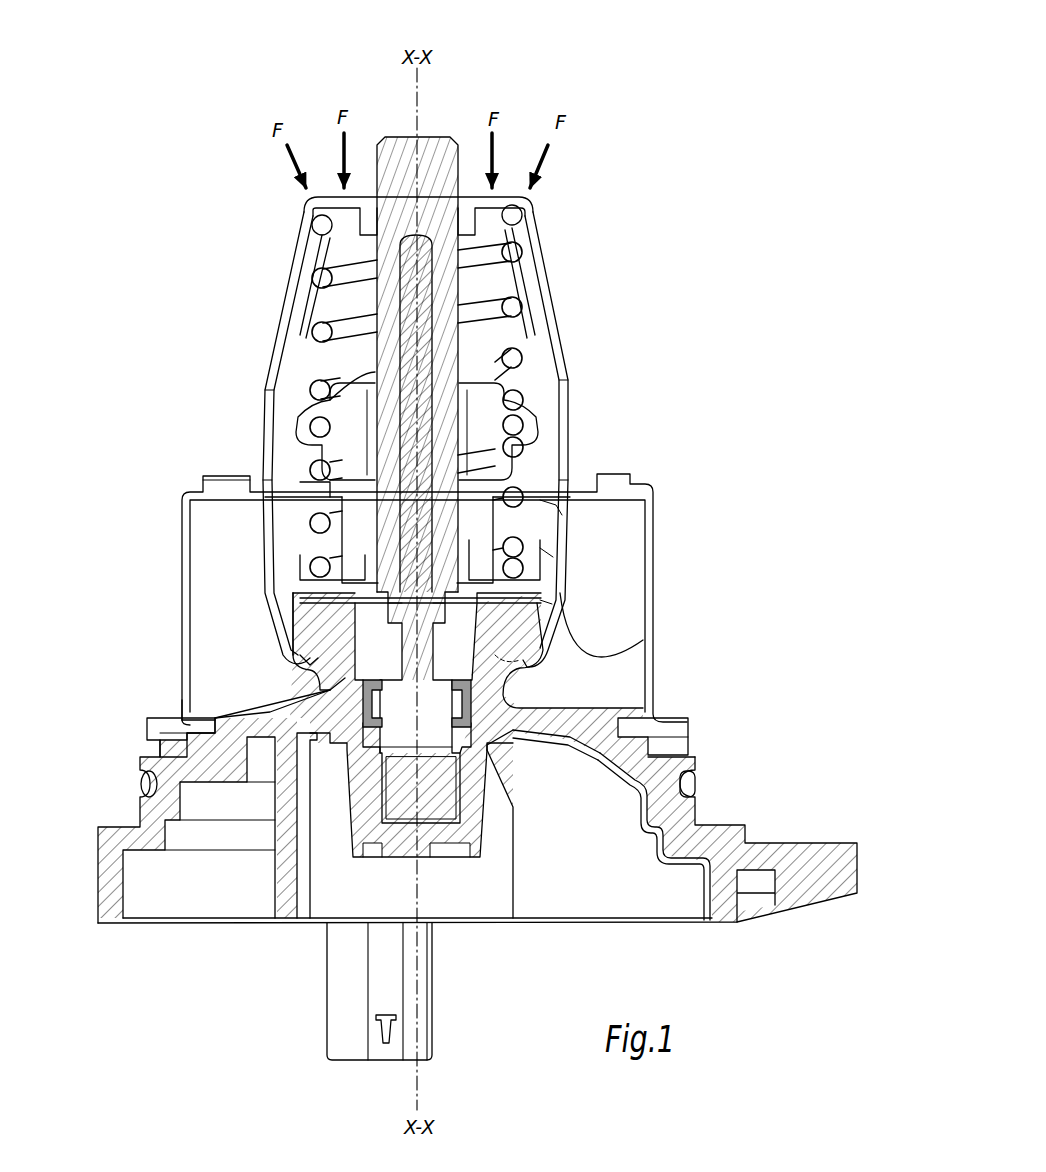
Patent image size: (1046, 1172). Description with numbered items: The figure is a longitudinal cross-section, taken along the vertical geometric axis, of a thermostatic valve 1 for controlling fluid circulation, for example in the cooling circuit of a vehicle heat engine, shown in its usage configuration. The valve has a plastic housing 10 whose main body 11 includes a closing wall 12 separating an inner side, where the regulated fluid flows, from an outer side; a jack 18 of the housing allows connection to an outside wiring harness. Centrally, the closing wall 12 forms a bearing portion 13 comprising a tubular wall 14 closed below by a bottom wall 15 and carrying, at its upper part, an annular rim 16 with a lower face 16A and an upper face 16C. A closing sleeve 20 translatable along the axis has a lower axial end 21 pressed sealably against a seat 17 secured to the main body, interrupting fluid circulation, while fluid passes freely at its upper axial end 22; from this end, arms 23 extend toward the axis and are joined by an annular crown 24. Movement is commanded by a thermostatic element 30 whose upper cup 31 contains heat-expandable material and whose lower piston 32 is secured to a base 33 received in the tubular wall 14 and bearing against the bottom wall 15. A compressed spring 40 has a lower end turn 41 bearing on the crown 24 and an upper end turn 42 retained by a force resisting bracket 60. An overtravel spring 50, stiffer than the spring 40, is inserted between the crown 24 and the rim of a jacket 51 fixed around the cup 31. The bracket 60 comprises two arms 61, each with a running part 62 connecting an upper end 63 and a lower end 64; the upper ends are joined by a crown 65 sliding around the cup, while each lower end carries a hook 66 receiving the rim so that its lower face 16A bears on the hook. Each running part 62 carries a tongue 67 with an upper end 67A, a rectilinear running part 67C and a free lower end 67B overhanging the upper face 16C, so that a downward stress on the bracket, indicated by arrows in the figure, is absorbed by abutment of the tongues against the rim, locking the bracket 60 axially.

The valve 1 is at (383, 120).
The housing 10 is at (100, 843).
The main body 11 is at (133, 813).
The closing wall 12 is at (257, 727).
The bearing portion 13 is at (262, 655).
The tubular wall 14 is at (333, 693).
The bottom wall 15 is at (397, 832).
The annular rim 16 is at (312, 628).
The lower face 16A is at (284, 663).
The upper face 16C is at (325, 561).
The seat 17 is at (162, 723).
The jack 18 is at (340, 1014).
The closing sleeve 20 is at (383, 569).
The lower axial end 21 is at (181, 713).
The upper axial end 22 is at (197, 485).
The arms 23 is at (256, 484).
The annular crown 24 is at (347, 362).
The thermostatic element 30 is at (320, 517).
The upper cup 31 is at (380, 555).
The lower piston 32 is at (407, 311).
The base 33 is at (438, 798).
The compression spring 40 is at (313, 268).
The lower end turn 41 is at (315, 413).
The upper end turn 42 is at (318, 222).
The overtravel spring 50 is at (300, 482).
The jacket 51 is at (308, 443).
The force resisting bracket 60 is at (470, 559).
The arms 61 is at (483, 566).
The running part 62 is at (565, 410).
The upper end 63 is at (525, 213).
The lower end 64 is at (640, 650).
The crown 65 is at (487, 213).
The hook 66 is at (560, 663).
The tongue 67 is at (503, 613).
The upper end 67A is at (562, 515).
The lower end 67B is at (578, 603).
The running part 67C is at (553, 557).